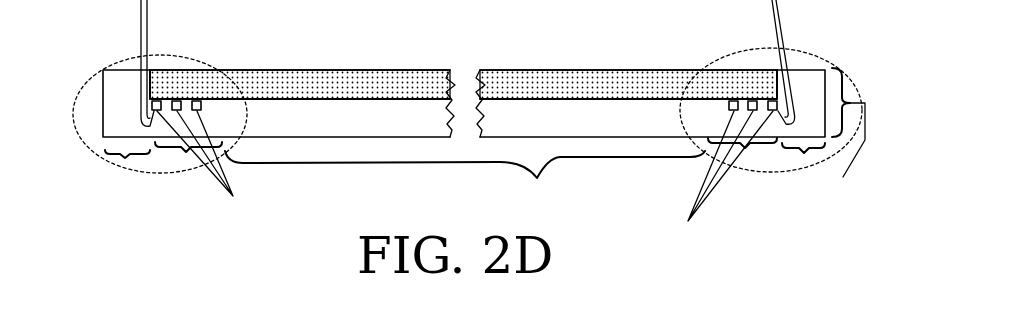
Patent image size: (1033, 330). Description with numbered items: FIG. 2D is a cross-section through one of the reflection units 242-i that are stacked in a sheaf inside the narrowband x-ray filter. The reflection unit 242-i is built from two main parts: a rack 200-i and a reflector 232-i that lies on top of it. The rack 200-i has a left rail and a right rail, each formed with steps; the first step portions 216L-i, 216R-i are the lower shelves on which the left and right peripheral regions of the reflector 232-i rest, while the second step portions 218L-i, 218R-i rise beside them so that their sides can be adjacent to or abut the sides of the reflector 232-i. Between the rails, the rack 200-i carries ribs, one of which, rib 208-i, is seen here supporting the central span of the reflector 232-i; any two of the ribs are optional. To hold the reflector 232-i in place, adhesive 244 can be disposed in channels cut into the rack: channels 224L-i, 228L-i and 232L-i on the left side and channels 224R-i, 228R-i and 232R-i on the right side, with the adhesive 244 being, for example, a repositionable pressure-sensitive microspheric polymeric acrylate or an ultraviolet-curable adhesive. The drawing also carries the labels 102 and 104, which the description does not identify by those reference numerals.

The circuit board 102 is at (152, 70).
The flexible connector 104 is at (775, 48).
The rack 200-i is at (676, 139).
The rib 208-i is at (537, 180).
The first step portion 216L-i is at (186, 153).
The first step portion 216R-i is at (745, 149).
The second step portion 218L-i is at (124, 158).
The second step portion 218R-i is at (803, 154).
The channel 224L-i is at (141, 26).
The channel 224R-i is at (776, 8).
The channel 228L-i is at (147, 50).
The channel 228R-i is at (781, 45).
The reflector 232-i is at (552, 82).
The channel 232L-i is at (203, 111).
The channel 232R-i is at (731, 101).
The reflection unit 242-i is at (838, 138).
The adhesive 244 is at (233, 196).